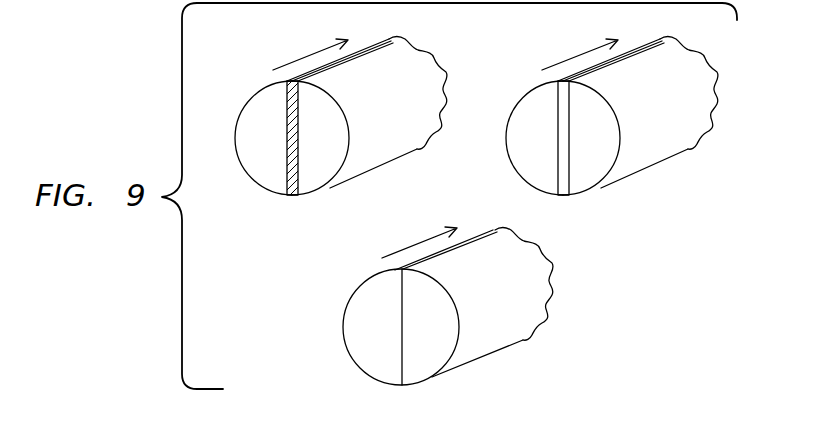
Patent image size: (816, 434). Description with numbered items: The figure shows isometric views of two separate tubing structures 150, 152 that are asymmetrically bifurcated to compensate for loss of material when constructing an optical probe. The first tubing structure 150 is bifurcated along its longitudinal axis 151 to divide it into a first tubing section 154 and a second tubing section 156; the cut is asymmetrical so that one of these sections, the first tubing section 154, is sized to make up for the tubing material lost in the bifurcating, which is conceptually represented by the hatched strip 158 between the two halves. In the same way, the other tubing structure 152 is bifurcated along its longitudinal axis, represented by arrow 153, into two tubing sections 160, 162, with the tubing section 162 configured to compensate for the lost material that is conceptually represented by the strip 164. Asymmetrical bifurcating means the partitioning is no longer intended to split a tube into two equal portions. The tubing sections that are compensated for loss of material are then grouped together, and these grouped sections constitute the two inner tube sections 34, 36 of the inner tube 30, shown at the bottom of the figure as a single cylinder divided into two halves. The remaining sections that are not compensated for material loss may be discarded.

The inner tube 30 is at (562, 331).
The inner tube section 34 is at (372, 278).
The inner tube section 36 is at (478, 358).
The tubing structure 150 is at (372, 168).
The longitudinal axis 151 is at (307, 56).
The tubing structure 152 is at (640, 168).
The arrow 153 is at (578, 56).
The first tubing section 154 is at (268, 87).
The second tubing section 156 is at (337, 98).
The strip 158 is at (291, 185).
The tubing section 160 is at (537, 88).
The tubing section 162 is at (607, 98).
The strip 164 is at (562, 185).